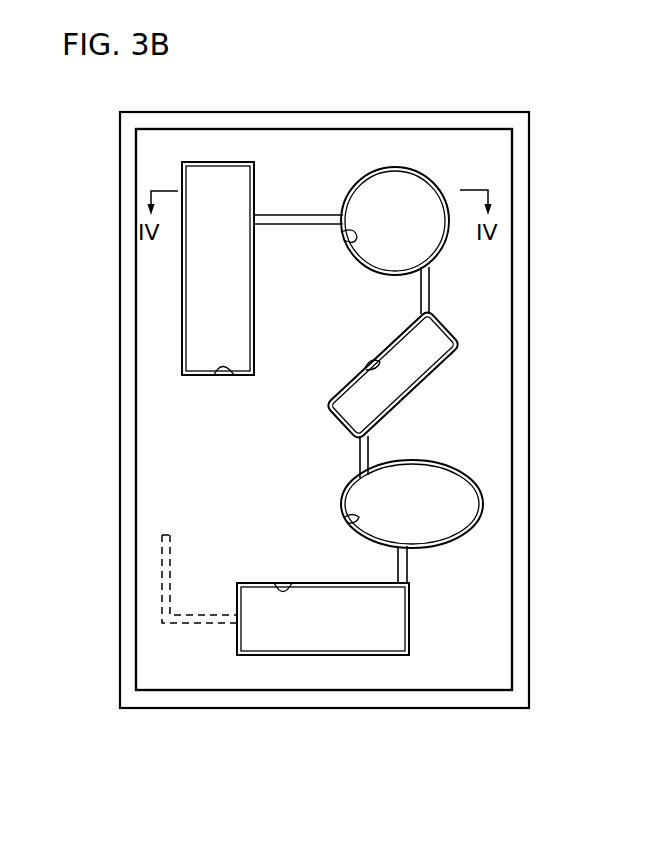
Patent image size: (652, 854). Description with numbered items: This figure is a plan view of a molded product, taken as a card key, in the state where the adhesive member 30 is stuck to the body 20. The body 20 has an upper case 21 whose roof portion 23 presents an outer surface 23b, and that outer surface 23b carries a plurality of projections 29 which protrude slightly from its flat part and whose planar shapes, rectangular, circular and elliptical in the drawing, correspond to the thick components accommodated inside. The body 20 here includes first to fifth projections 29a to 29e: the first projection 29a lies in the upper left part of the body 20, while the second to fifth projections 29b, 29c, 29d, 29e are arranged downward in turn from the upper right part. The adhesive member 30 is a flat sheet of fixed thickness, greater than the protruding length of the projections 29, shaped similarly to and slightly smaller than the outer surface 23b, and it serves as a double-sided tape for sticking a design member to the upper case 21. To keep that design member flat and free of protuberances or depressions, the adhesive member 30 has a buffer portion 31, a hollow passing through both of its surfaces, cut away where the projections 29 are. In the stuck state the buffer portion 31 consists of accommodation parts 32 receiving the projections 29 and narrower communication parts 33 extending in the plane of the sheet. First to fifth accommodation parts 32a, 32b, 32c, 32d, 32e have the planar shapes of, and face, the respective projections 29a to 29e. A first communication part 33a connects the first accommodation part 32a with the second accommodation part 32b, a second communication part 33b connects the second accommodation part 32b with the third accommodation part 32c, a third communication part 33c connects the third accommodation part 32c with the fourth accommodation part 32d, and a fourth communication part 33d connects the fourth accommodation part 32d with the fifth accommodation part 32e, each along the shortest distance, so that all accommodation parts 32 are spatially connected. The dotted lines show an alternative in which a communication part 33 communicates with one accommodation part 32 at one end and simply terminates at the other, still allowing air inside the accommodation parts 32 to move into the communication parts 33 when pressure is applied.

The body 20 is at (324, 376).
The upper case 21 is at (263, 97).
The roof portion 23 is at (324, 380).
The outer surface 23b is at (373, 123).
The projections 29 is at (327, 407).
The first projection 29a is at (200, 300).
The second projection 29b is at (417, 193).
The third projection 29c is at (438, 350).
The fourth projection 29d is at (462, 508).
The fifth projection 29e is at (312, 640).
The adhesive member 30 is at (518, 158).
The buffer portion 31 is at (234, 663).
The accommodation parts 32 is at (283, 411).
The first accommodation part 32a is at (222, 366).
The second accommodation part 32b is at (350, 240).
The third accommodation part 32c is at (368, 368).
The fourth accommodation part 32d is at (347, 518).
The fifth accommodation part 32e is at (283, 592).
The communication parts 33 is at (172, 550).
The first communication part 33a is at (296, 215).
The second communication part 33b is at (424, 291).
The third communication part 33c is at (363, 455).
The fourth communication part 33d is at (403, 567).